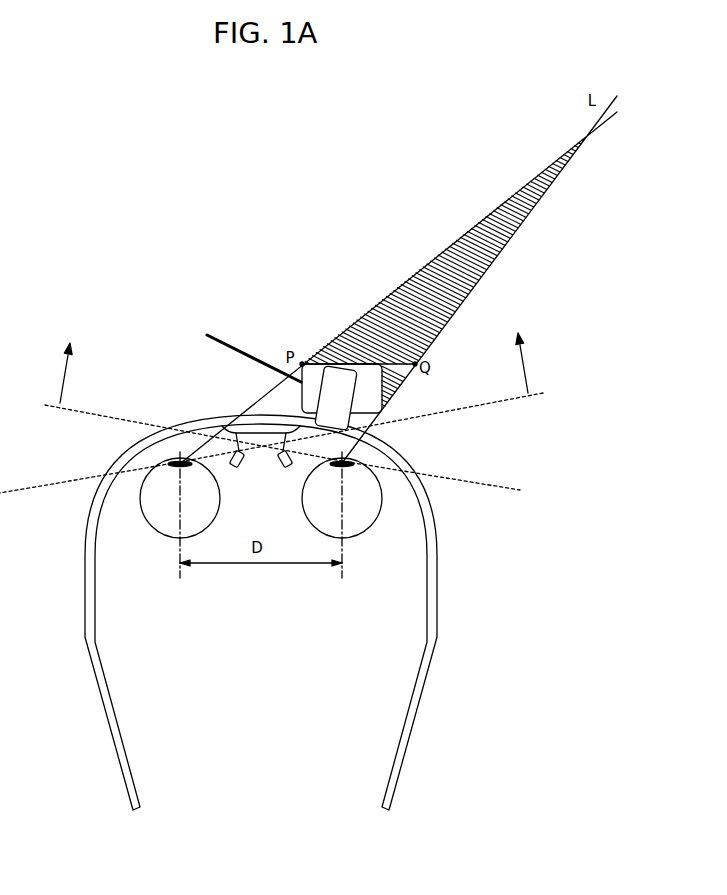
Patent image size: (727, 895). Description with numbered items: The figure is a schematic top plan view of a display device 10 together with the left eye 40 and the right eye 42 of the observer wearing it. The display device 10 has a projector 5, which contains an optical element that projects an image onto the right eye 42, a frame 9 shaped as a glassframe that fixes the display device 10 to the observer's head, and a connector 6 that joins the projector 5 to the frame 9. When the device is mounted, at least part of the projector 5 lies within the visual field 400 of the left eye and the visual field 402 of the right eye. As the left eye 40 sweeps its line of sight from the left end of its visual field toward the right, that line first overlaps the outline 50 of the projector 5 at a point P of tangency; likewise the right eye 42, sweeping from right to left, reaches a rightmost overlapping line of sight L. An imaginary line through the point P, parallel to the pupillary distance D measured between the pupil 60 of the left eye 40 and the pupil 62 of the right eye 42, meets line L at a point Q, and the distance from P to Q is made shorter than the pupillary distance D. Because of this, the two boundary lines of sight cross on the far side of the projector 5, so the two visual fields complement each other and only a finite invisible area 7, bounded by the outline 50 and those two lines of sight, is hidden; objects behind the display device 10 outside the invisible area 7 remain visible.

The display device 10 is at (121, 256).
The projector 5 is at (370, 375).
The connector 6 is at (328, 402).
The invisible area 7 is at (430, 266).
The frame 9 is at (438, 593).
The left eye 40 is at (155, 518).
The right eye 42 is at (361, 518).
The outline of the projector 50 is at (234, 352).
The pupil of the left eye 60 is at (178, 467).
The pupil of the right eye 62 is at (344, 467).
The visual field of the left eye 400 is at (281, 413).
The visual field of the right eye 402 is at (273, 416).